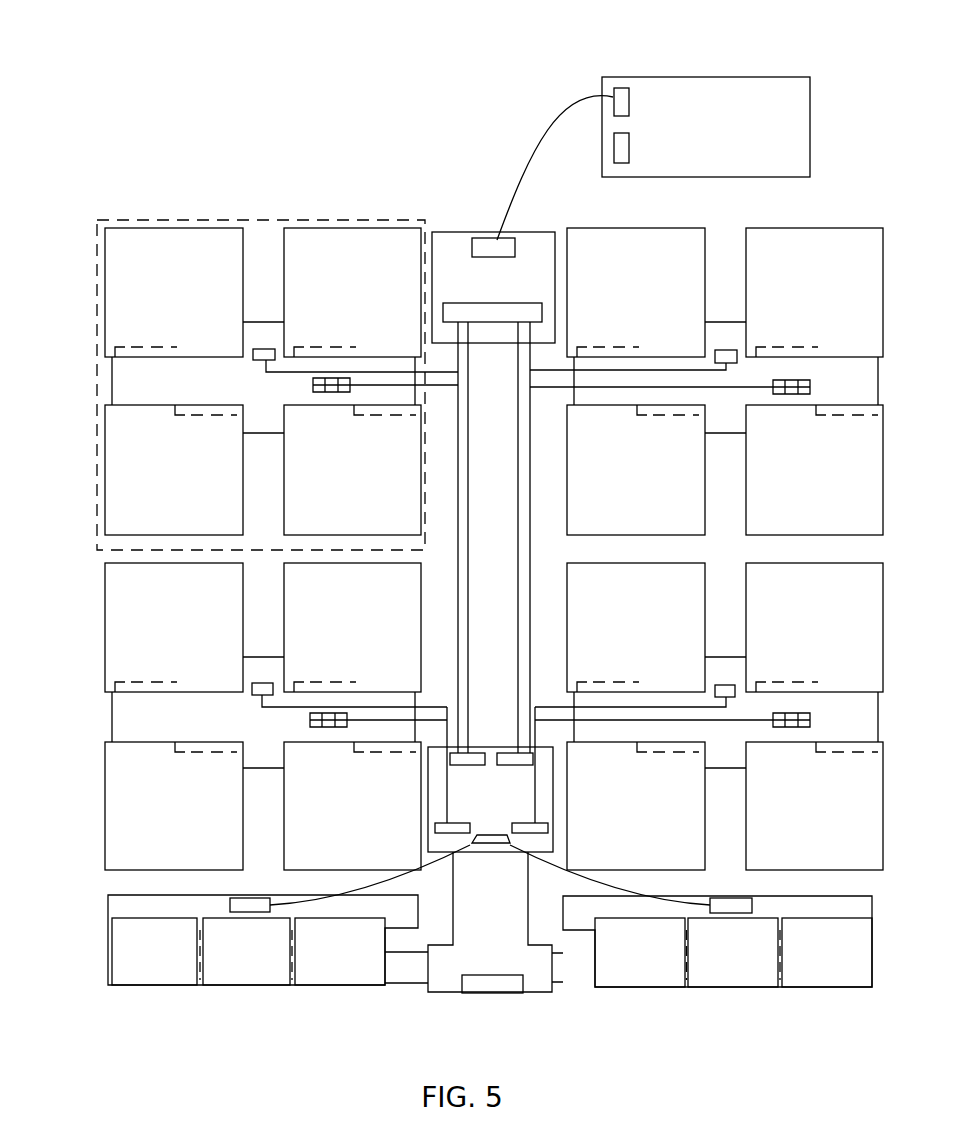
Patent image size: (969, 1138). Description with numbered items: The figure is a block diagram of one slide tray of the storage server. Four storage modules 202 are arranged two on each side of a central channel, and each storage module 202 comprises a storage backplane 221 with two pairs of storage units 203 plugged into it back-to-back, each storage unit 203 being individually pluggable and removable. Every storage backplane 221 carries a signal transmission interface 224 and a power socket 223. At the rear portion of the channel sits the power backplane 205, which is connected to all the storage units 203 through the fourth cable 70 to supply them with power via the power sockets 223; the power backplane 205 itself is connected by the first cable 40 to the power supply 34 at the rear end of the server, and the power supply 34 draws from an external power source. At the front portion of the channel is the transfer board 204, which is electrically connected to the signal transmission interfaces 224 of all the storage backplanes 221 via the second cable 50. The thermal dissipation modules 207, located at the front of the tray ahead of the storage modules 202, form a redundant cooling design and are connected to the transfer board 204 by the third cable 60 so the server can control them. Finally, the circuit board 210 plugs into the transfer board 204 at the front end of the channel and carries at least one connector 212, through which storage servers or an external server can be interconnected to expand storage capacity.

The power supply 34 is at (650, 95).
The first cable 40 is at (537, 152).
The power backplane 205 is at (455, 262).
The storage module 202 is at (180, 220).
The storage unit 203 is at (118, 282).
The storage backplane 221 is at (112, 332).
The signal transmission interface 224 is at (268, 348).
The power socket 223 is at (312, 385).
The fourth cable 70 is at (470, 384).
The second cable 50 is at (460, 407).
The transfer board 204 is at (502, 745).
The third cable 60 is at (372, 882).
The thermal dissipation module 207 is at (112, 953).
The circuit board 210 is at (437, 975).
The connector 212 is at (512, 982).